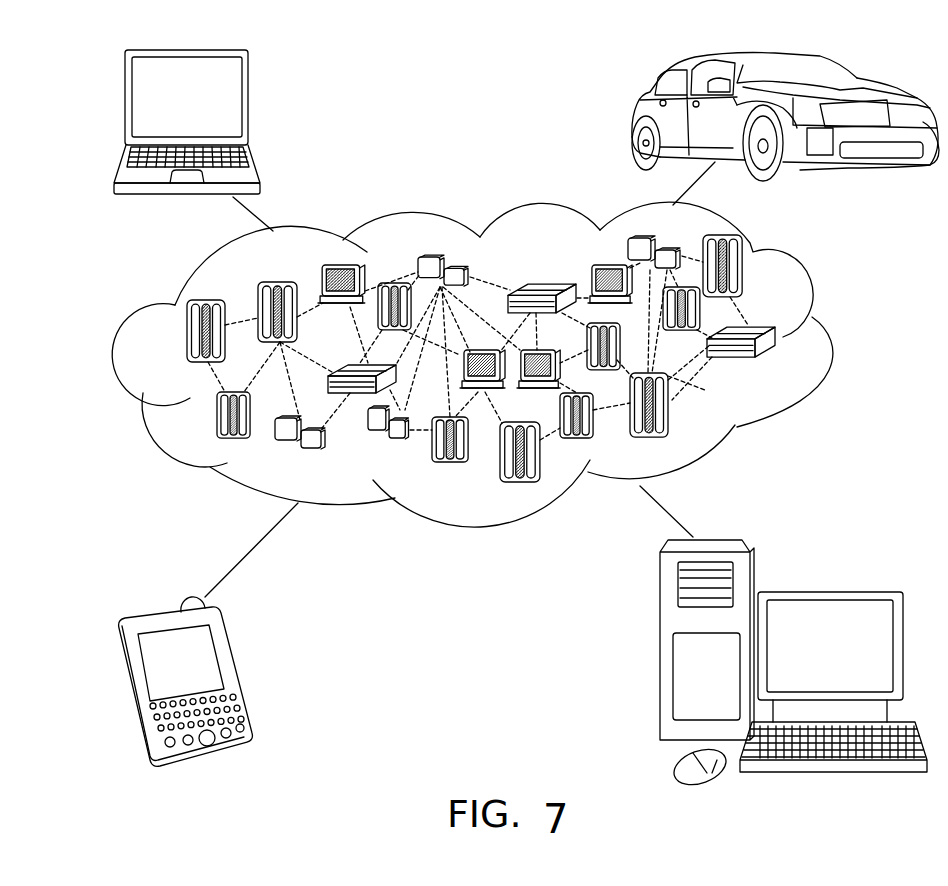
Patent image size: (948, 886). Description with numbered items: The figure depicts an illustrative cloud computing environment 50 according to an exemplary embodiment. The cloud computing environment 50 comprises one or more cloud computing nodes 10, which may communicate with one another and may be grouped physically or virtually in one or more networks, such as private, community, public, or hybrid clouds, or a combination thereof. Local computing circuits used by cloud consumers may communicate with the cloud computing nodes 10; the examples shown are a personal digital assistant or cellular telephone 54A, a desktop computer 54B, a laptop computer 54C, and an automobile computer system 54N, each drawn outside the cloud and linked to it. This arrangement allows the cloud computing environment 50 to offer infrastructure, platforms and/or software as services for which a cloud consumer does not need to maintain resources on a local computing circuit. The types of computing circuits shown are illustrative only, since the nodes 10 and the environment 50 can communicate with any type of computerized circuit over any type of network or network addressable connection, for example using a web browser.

The cloud computing node 10 is at (777, 366).
The cloud computing environment 50 is at (830, 340).
The personal digital assistant or cellular telephone 54A is at (238, 672).
The desktop computer 54B is at (827, 590).
The laptop computer 54C is at (248, 105).
The automobile computer system 54N is at (636, 118).